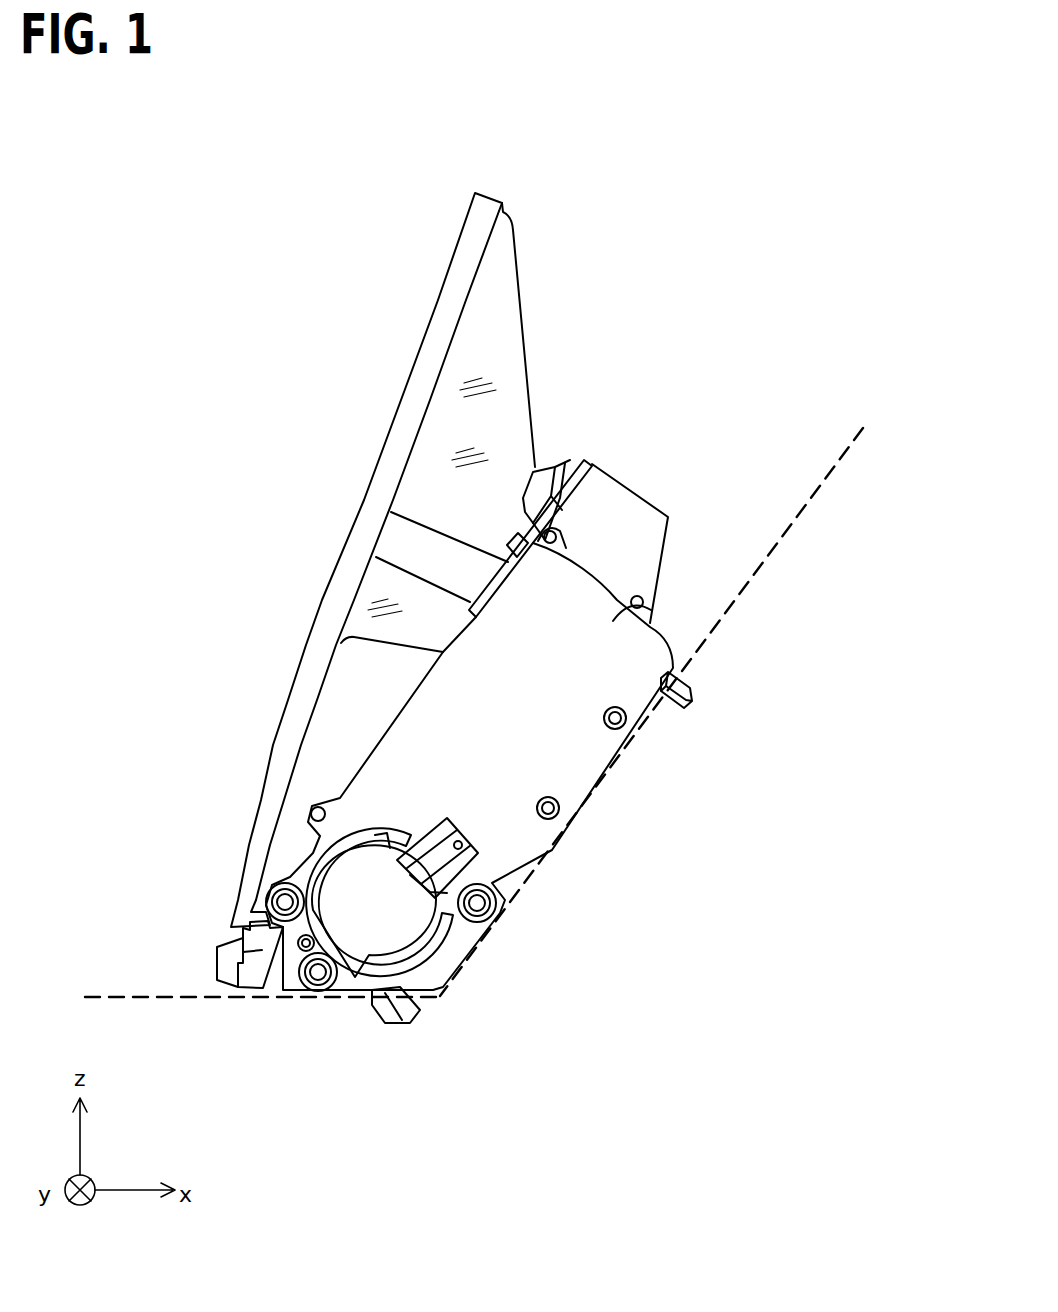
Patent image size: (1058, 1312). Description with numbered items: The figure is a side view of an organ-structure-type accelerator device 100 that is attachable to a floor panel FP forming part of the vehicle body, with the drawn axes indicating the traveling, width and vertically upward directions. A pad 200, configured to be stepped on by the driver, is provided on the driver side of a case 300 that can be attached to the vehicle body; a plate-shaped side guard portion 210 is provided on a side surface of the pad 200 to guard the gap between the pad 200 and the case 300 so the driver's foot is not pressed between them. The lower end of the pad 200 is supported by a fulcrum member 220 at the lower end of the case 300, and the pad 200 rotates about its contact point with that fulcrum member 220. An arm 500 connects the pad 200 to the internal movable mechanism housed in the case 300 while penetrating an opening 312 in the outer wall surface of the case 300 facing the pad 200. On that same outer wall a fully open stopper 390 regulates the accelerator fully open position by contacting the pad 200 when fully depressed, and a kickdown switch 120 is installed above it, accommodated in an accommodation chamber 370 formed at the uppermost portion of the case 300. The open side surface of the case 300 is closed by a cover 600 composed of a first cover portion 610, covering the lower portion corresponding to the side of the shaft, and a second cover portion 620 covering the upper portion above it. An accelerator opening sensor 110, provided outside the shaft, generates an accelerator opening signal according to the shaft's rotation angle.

The accelerator device 100 is at (763, 333).
The accelerator opening sensor 110 is at (343, 930).
The kickdown switch 120 is at (557, 467).
The pad 200 is at (457, 303).
The side guard portion 210 is at (500, 313).
The fulcrum member 220 is at (252, 957).
The case 300 is at (670, 505).
The opening 312 is at (500, 560).
The accommodation chamber 370 is at (623, 507).
The fully open stopper 390 is at (513, 530).
The arm 500 is at (397, 543).
The cover 600 is at (847, 750).
The first cover portion 610 is at (463, 928).
The second cover portion 620 is at (567, 762).
The floor panel FP is at (803, 510).